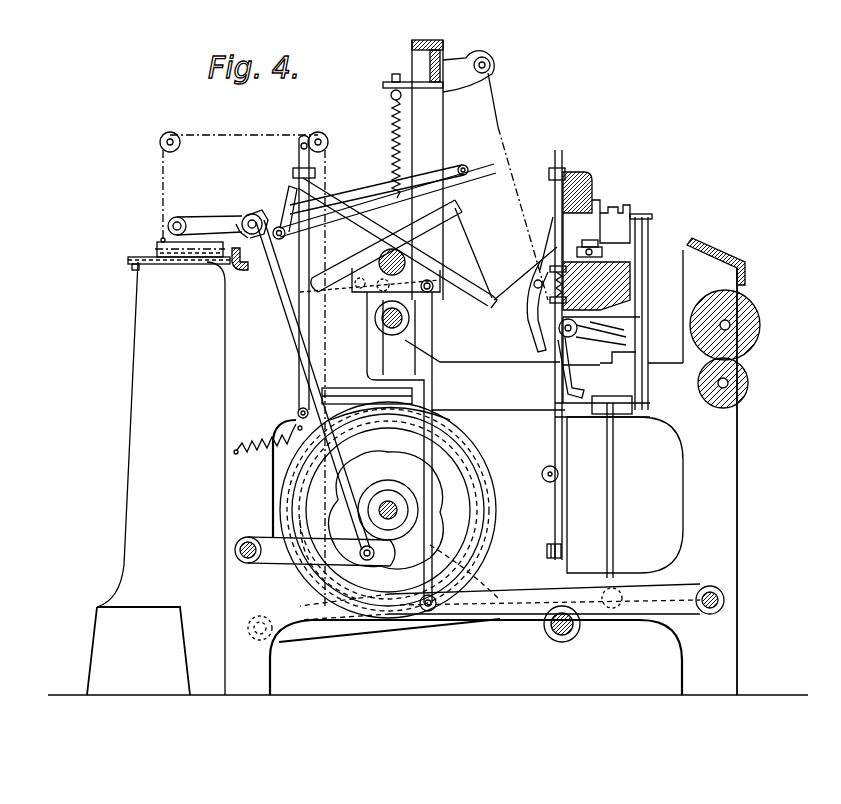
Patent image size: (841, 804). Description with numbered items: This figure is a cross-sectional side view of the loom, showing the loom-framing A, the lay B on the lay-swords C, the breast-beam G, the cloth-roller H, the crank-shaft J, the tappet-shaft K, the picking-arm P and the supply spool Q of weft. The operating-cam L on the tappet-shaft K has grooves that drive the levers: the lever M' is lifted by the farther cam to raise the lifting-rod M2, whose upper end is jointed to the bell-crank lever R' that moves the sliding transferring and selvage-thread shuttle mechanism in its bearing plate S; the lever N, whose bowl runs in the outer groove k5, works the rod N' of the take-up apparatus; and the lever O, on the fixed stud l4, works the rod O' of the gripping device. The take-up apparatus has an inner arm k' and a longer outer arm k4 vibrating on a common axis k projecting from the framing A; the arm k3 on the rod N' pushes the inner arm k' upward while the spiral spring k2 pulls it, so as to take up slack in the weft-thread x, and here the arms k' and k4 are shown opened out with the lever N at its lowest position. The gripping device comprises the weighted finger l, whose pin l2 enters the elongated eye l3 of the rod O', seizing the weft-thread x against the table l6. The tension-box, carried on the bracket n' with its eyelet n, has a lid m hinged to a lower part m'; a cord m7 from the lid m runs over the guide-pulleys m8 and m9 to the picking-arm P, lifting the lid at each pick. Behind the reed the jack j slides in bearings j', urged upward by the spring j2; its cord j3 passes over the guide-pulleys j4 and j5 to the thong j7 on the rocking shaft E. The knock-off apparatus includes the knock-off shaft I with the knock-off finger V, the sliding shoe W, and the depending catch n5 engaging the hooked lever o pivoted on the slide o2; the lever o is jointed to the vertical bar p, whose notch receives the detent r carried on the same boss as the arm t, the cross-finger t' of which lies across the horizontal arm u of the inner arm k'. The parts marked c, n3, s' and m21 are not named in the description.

The loom-framing A is at (486, 367).
The lay B is at (601, 289).
The lay-swords C is at (533, 307).
The rocking shaft E is at (483, 56).
The breast-beam G is at (714, 293).
The cloth-roller H is at (728, 349).
The knock-off shaft I is at (592, 342).
The crank-shaft J is at (399, 447).
The tappet-shaft K is at (390, 510).
The operating-cam L is at (390, 424).
The lever for actuating the take-up apparatus N is at (634, 614).
The lever for actuating the gripping device O is at (321, 393).
The picking-arm P is at (465, 655).
The supply spool or bobbin Q is at (138, 651).
The grooved or recessed plate S is at (538, 243).
The knock-off finger V is at (610, 325).
The sliding shoe W is at (641, 345).
The lever for operating the sliding transferring and selvage-thread shuttle mechanis M' is at (500, 589).
The lifting-rod M2 is at (618, 487).
The rod for actuating the take-up apparatus N' is at (416, 438).
The rod for actuating the gripping device O' is at (318, 393).
The bell-crank lever R' is at (613, 315).
The clamp c is at (598, 200).
The jack j is at (553, 355).
The bearings j' is at (550, 171).
The spiral spring j2 is at (550, 286).
The cord j3 is at (523, 213).
The guide-pulley j4 is at (540, 475).
The guide-pulley j5 is at (563, 548).
The belt or thong j7 is at (501, 100).
The common center or axis k is at (370, 267).
The inner arm k' is at (386, 246).
The spiral spring k2 is at (407, 136).
The arm k3 is at (381, 322).
The longer or outer arm k4 is at (397, 243).
The cam groove k5 is at (376, 474).
The weighted finger l is at (205, 221).
The projecting pin l2 is at (255, 224).
The elongated eye l3 is at (242, 218).
The fixed stud or center l4 is at (242, 550).
The table l6 is at (240, 260).
The upper part or lid m is at (190, 244).
The lower part m' is at (191, 252).
The cord m7 is at (240, 361).
The guide-pulley m8 is at (163, 135).
The guide-pulley m9 is at (327, 135).
The pin m21 is at (724, 600).
The eyelet n is at (126, 272).
The arm or bracket n' is at (179, 272).
The pin n3 is at (286, 226).
The depending finger or catch n5 is at (576, 367).
The horizontal lever or rocking bar o is at (427, 426).
The slide o2 is at (367, 396).
The vertical bar p is at (299, 273).
The detent r is at (286, 208).
The spring s' is at (265, 435).
The lever or arm t is at (377, 189).
The projecting cross-finger t' is at (468, 161).
The horizontal arm u is at (390, 196).
The weft-thread x is at (327, 451).